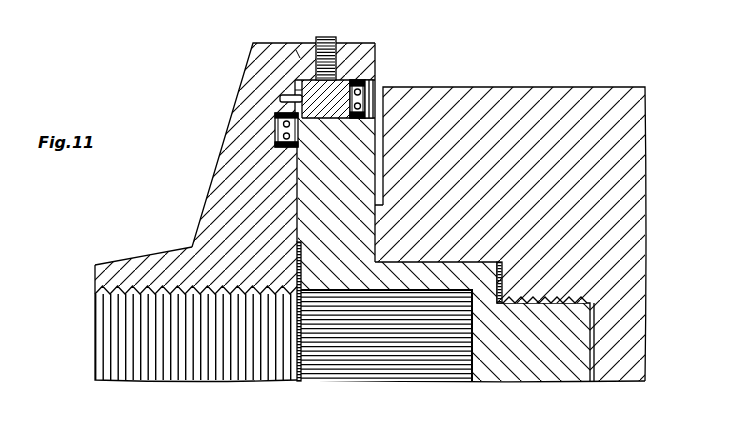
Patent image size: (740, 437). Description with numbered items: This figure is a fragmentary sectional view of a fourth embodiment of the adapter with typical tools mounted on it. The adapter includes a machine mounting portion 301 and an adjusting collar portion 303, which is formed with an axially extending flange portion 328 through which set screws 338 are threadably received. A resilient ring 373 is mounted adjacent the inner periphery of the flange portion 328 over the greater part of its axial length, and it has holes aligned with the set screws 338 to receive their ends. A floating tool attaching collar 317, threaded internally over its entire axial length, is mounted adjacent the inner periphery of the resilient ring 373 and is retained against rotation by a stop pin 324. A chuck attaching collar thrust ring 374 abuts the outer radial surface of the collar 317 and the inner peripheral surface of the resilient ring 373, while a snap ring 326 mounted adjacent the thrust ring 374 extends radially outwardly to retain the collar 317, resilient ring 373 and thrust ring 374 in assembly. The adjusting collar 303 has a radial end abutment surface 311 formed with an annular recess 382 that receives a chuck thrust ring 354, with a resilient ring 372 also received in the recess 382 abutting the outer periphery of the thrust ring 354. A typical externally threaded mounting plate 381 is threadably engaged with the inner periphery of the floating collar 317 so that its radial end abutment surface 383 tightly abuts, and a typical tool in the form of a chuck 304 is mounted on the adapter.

The machine mounting portion 301 is at (158, 262).
The adjusting collar portion 303 is at (260, 72).
The chuck 304 is at (622, 102).
The radial end abutment surface 311 is at (297, 177).
The floating tool attaching collar 317 is at (374, 76).
The stop pin 324 is at (287, 92).
The snap ring 326 is at (368, 85).
The axially extending flange portion 328 is at (298, 55).
The set screws 338 is at (326, 40).
The chuck thrust ring 354 is at (276, 124).
The resilient ring 372 is at (284, 100).
The resilient ring 373 is at (340, 95).
The chuck attaching collar thrust ring 374 is at (370, 105).
The mounting plate 381 is at (555, 357).
The annular recess 382 is at (278, 143).
The radial end abutment surface 383 is at (297, 214).